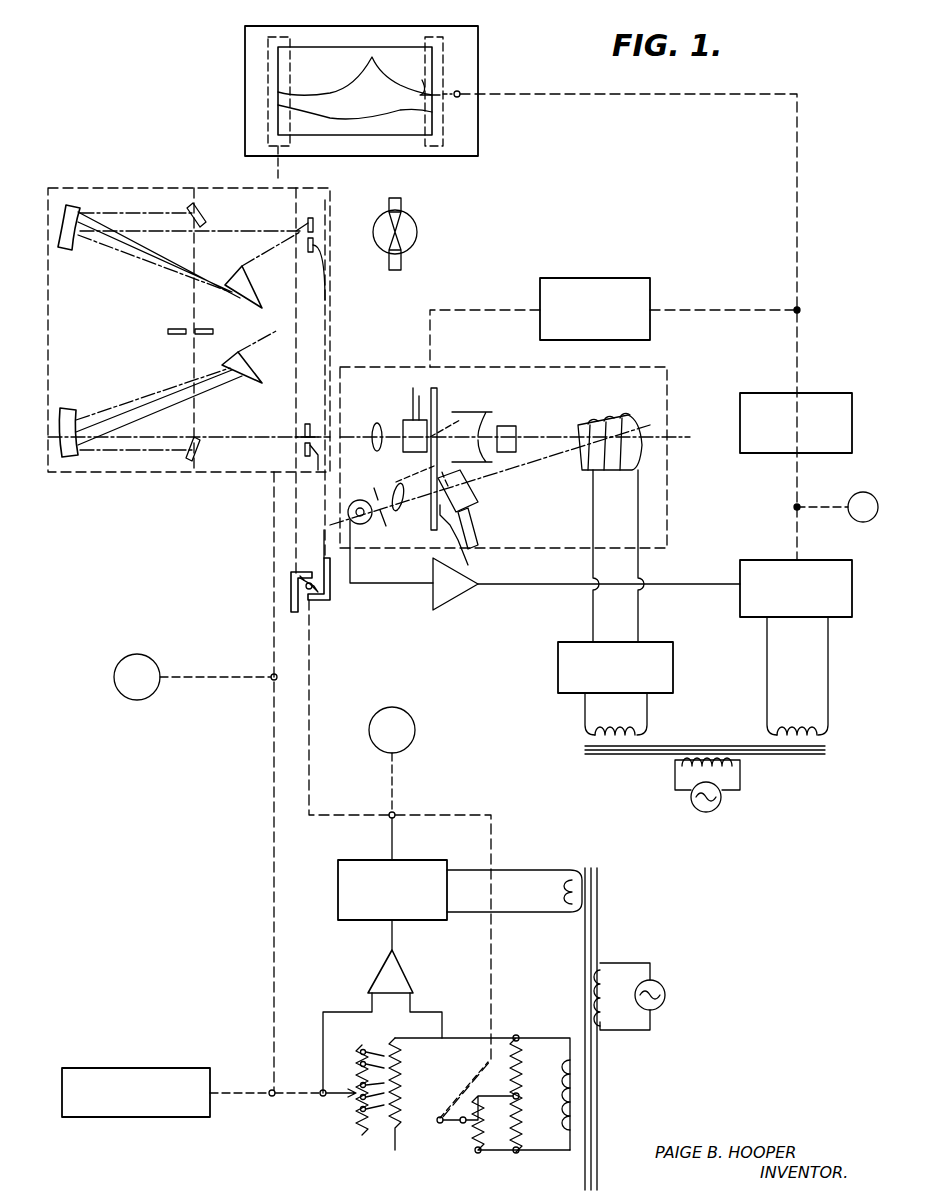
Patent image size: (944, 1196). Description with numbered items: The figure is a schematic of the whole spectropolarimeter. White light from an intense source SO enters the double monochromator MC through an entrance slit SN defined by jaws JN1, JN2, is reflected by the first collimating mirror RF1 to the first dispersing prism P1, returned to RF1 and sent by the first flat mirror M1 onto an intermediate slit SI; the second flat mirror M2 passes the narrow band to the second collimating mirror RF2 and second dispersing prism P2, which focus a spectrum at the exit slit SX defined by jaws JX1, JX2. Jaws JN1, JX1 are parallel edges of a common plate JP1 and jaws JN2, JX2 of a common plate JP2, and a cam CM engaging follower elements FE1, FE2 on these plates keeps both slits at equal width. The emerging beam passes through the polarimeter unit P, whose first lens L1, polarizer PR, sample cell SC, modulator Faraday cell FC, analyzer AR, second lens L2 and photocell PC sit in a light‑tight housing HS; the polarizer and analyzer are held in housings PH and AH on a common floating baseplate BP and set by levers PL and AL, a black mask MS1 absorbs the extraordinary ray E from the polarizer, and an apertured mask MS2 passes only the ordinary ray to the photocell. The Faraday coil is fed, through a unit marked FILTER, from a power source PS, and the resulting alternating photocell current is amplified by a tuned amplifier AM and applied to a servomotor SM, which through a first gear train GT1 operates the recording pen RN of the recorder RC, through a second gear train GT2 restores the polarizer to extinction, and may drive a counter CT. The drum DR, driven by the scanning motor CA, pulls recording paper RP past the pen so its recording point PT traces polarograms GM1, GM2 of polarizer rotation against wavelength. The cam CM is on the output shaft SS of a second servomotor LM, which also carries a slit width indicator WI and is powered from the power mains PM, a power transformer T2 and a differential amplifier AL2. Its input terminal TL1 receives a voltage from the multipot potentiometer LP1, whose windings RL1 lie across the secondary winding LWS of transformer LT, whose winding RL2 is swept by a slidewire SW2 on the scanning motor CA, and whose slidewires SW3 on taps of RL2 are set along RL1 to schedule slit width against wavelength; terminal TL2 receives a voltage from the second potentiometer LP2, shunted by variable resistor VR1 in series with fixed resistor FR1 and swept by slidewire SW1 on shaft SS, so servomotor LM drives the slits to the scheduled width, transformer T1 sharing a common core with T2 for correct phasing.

The pen recorder RC is at (467, 58).
The drum DR is at (268, 44).
The recording paper RP is at (290, 46).
The first polarogram GM1 is at (330, 118).
The second polarogram GM2 is at (356, 72).
The recording point PT is at (422, 80).
The recording pen RN is at (443, 96).
The monochromator MC is at (150, 185).
The first collimating mirror RF1 is at (66, 252).
The second collimating mirror RF2 is at (66, 406).
The first flat mirror M1 is at (196, 204).
The second flat mirror M2 is at (190, 462).
The first dispersing prism P1 is at (240, 272).
The second dispersing prism P2 is at (252, 382).
The intermediate slit SI is at (190, 329).
The entrance slit jaw JN1 is at (313, 225).
The entrance slit jaw JN2 is at (320, 245).
The entrance slit SN is at (313, 232).
The light source SO is at (410, 224).
The exit slit jaw JX1 is at (305, 434).
The exit slit jaw JX2 is at (305, 456).
The exit slit SX is at (305, 448).
The light-tight housing HS is at (672, 380).
The second gear train GT2 is at (610, 278).
The first gear train GT1 is at (820, 393).
The first lens L1 is at (373, 426).
The second lens L2 is at (390, 492).
The polarizer PR is at (406, 420).
The polarizer lever PL is at (413, 388).
The polarimeter unit P is at (400, 386).
The polarizer housing PH is at (430, 450).
The floating baseplate BP is at (436, 392).
The extraordinary ray E is at (446, 412).
The sample cell SC is at (508, 426).
The black mask MS1 is at (484, 448).
The apertured mask MS2 is at (386, 526).
The modulator Faraday cell FC is at (576, 412).
The photocell PC is at (350, 524).
The analyzer AR is at (478, 496).
The analyzer lever AL is at (478, 528).
The analyzer housing AH is at (468, 550).
The tuned amplifier AM is at (452, 600).
The slit jaw plate JP1 is at (291, 596).
The slit jaw plate JP2 is at (330, 588).
The cam CM is at (302, 596).
The follower element FE1 is at (302, 574).
The follower element FE2 is at (314, 600).
The counter CT is at (836, 507).
The servomotor SM is at (852, 582).
The filter FILTER is at (615, 688).
The power source PS is at (572, 752).
The slit width indicator WI is at (400, 859).
The output shaft SS is at (390, 860).
The slit servomotor LM is at (422, 860).
The power mains PM is at (505, 908).
The power transformer T2 is at (606, 870).
The transformer LT is at (612, 1036).
The first input terminal TL1 is at (368, 1005).
The second input terminal TL2 is at (412, 1006).
The differential amplifier AL2 is at (405, 972).
The second potentiometer winding RL2 is at (362, 1080).
The potentiometer winding RL1 is at (392, 1135).
The slit width slidewires SW3 is at (372, 1054).
The slidewire SW2 is at (324, 1096).
The slidewire SW1 is at (440, 1124).
The slit width control potentiometer LP1 is at (356, 1118).
The second potentiometer LP2 is at (478, 1152).
The scanning motor CA is at (160, 1068).
The variable resistor VR1 is at (520, 1100).
The fixed resistor FR1 is at (518, 1036).
The secondary winding LWS is at (528, 1108).
The transformer T1 is at (574, 1135).